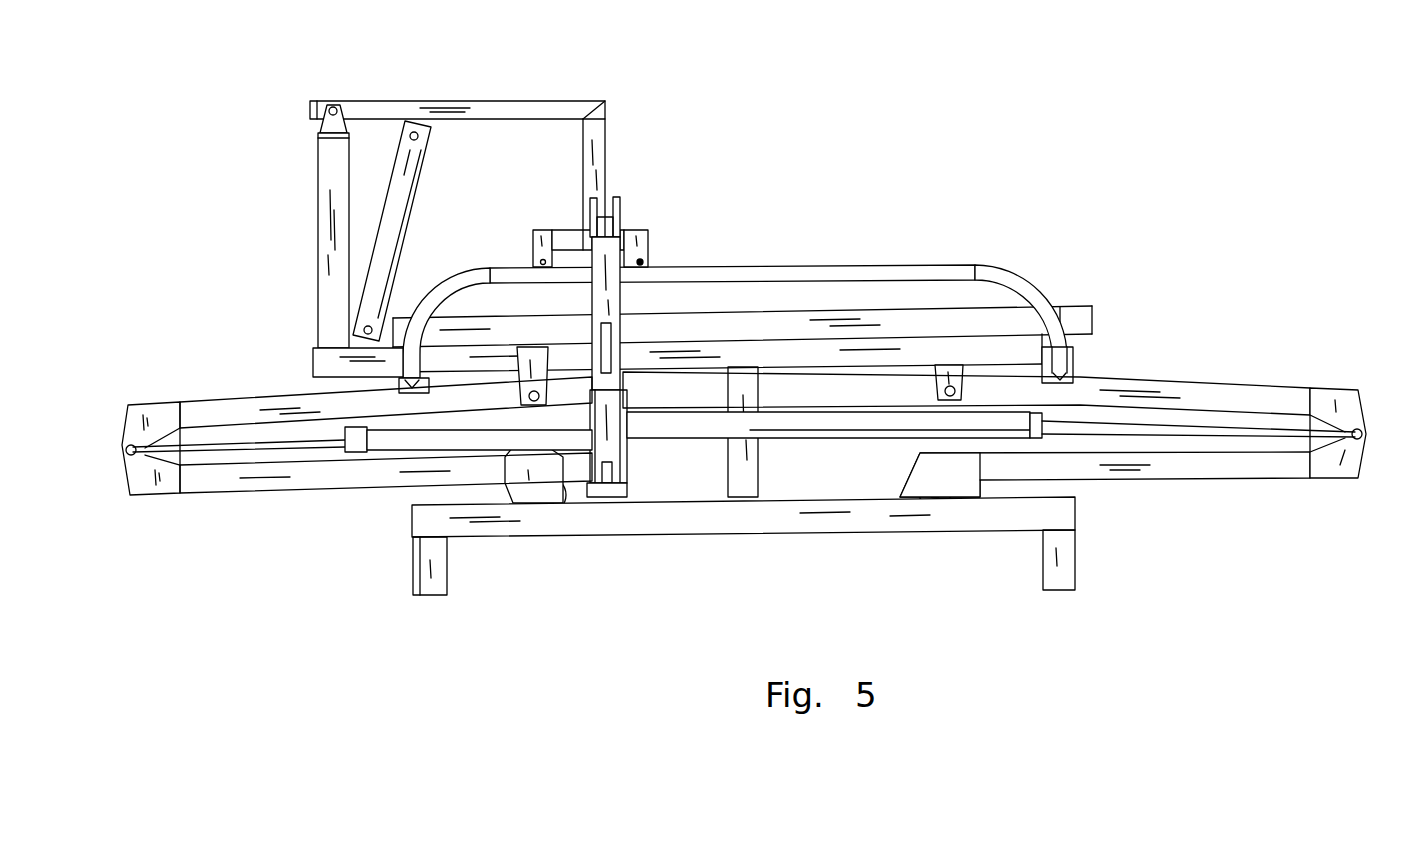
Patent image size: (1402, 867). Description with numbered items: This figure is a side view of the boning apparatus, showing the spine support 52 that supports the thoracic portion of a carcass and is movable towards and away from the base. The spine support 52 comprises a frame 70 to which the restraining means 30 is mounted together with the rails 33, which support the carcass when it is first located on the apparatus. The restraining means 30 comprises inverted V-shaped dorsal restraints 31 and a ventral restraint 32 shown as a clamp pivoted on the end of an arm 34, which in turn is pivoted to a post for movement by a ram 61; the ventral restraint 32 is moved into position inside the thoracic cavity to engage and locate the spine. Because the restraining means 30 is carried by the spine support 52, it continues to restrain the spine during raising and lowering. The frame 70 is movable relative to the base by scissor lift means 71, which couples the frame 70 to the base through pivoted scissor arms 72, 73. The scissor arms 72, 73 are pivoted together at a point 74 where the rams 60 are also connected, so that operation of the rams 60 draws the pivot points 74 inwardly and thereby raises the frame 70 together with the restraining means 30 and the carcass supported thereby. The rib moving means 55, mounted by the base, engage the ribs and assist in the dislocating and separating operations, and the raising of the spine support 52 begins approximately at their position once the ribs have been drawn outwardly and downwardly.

The restraining means 30 is at (769, 306).
The dorsal restraints 31 is at (1018, 322).
The ventral restraint 32 is at (533, 245).
The rails 33 is at (888, 266).
The arm 34 is at (515, 110).
The spine support 52 is at (744, 456).
The rib moving means 55 is at (634, 464).
The rams 60 is at (822, 420).
The ram 61 is at (392, 220).
The frame 70 is at (318, 366).
The scissor lift means 71 is at (264, 502).
The scissor arm 72 is at (310, 408).
The scissor arm 73 is at (350, 478).
The pivot point 74 is at (140, 457).